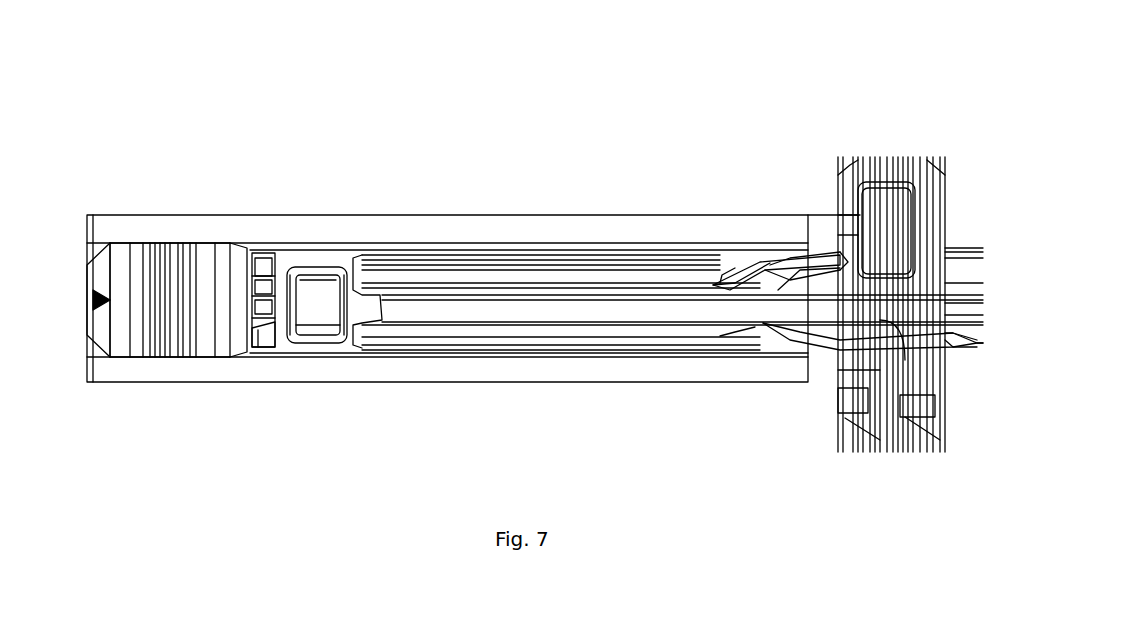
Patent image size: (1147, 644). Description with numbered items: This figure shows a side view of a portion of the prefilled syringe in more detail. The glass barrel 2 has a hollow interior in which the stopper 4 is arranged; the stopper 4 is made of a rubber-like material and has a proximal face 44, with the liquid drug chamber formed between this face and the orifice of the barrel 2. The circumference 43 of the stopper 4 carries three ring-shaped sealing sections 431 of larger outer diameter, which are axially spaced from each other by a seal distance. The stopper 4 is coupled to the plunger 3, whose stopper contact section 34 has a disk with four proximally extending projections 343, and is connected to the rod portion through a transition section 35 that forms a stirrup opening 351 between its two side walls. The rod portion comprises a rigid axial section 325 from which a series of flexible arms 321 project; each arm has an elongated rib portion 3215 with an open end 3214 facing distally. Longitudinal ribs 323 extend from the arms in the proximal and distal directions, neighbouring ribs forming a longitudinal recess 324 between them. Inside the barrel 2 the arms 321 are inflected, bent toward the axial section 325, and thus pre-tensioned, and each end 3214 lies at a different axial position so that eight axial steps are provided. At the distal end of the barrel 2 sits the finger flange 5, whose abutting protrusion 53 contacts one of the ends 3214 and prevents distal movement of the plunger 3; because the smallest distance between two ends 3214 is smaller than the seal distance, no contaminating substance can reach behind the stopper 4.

The glass barrel 2 is at (583, 213).
The plunger 3 is at (663, 350).
The stopper 4 is at (128, 232).
The finger flange 5 is at (873, 157).
The stopper contact section 34 is at (265, 240).
The transition section 35 is at (313, 240).
The circumference 43 is at (155, 357).
The proximal face 44 is at (100, 330).
The abutting protrusion 53 is at (948, 250).
The flexible arms 321 is at (786, 243).
The longitudinal ribs 323 is at (568, 337).
The longitudinal recess 324 is at (489, 270).
The rigid axial section 325 is at (543, 287).
The projections 343 is at (264, 347).
The stirrup opening 351 is at (319, 310).
The sealing sections 431 is at (172, 243).
The open end 3214 is at (955, 350).
The elongated rib portion 3215 is at (818, 245).